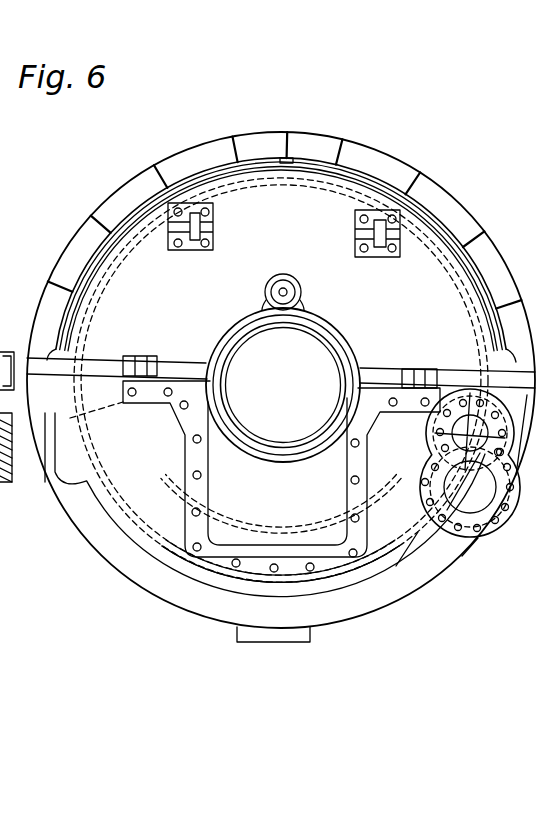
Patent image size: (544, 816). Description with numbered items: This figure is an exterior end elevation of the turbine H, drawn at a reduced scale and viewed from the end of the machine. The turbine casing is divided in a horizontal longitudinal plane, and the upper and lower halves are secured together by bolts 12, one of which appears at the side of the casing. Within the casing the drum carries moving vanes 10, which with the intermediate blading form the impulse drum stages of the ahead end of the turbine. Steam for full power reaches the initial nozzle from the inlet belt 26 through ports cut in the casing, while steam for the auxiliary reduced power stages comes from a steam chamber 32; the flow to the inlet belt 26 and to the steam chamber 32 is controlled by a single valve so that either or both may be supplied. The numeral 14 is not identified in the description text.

The turbine H is at (281, 373).
The moving vanes 10 is at (281, 368).
The bolts 12 is at (5, 351).
The flange 14 is at (284, 389).
The inlet belt 26 is at (205, 590).
The steam chamber 32 is at (170, 488).